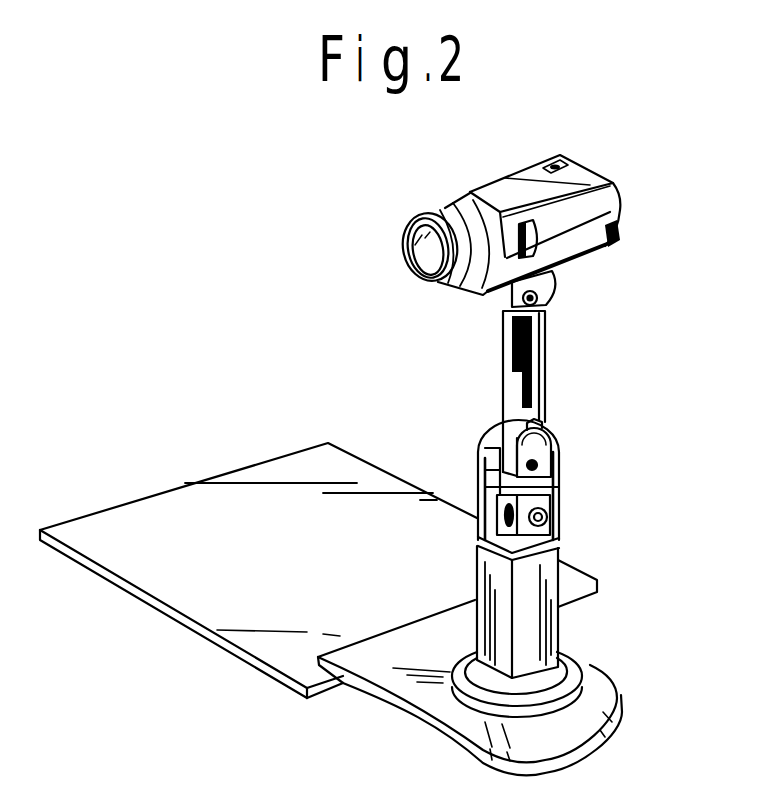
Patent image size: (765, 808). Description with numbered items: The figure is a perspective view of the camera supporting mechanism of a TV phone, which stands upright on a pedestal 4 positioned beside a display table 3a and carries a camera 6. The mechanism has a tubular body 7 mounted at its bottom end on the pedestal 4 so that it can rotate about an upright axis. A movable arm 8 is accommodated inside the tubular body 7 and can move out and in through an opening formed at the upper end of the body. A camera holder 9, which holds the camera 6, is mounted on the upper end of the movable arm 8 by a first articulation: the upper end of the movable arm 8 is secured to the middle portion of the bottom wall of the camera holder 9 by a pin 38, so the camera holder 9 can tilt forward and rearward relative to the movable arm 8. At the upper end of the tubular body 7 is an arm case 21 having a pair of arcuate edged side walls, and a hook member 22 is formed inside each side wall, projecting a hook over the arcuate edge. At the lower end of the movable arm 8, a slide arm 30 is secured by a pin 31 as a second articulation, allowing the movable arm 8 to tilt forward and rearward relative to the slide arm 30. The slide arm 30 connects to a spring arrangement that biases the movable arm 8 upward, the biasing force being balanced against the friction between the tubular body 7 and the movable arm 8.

The display table 3a is at (207, 610).
The pedestal 4 is at (600, 673).
The camera 6 is at (595, 164).
The tubular body 7 is at (553, 573).
The movable arm 8 is at (540, 355).
The camera holder 9 is at (608, 247).
The arm case 21 is at (548, 428).
The hook member 22 is at (560, 487).
The slide arm 30 is at (552, 438).
The pin 31 is at (550, 465).
The pin 38 is at (540, 297).